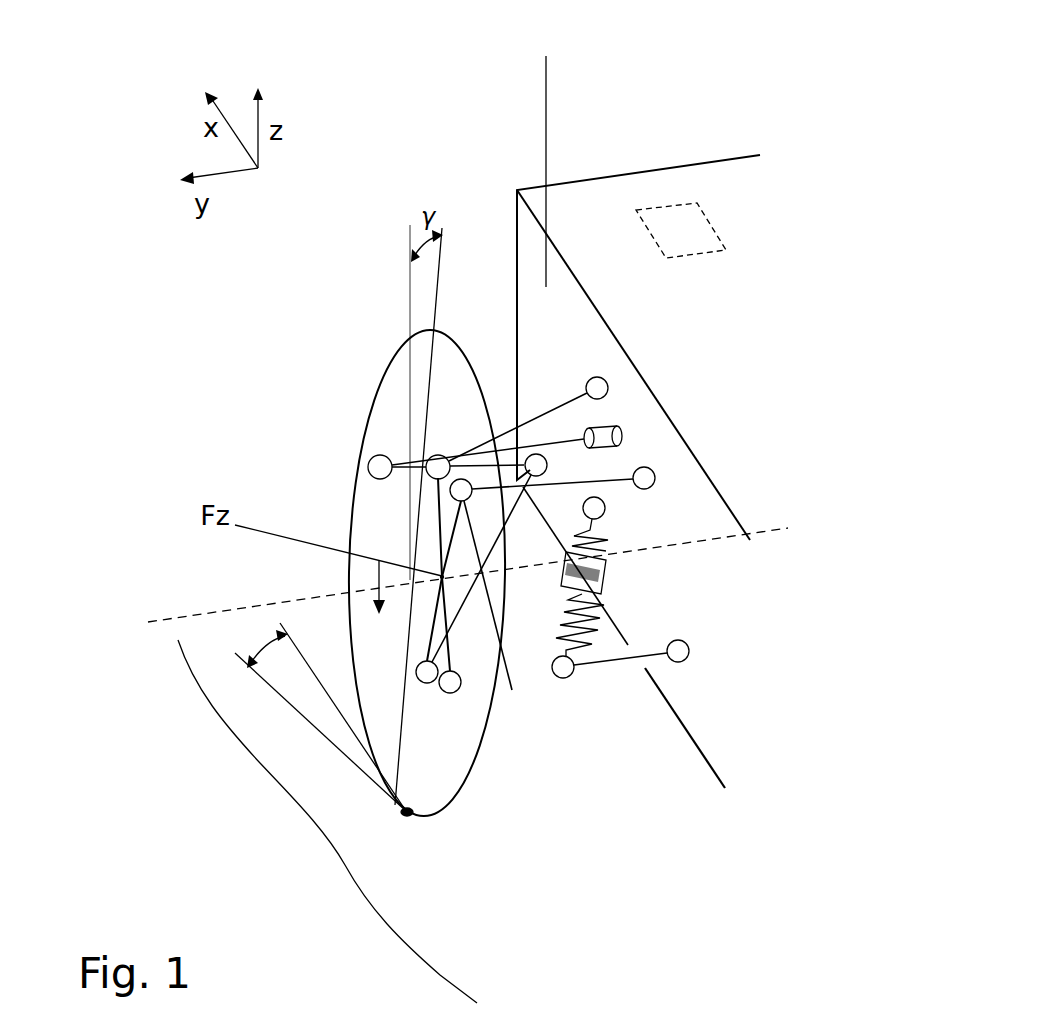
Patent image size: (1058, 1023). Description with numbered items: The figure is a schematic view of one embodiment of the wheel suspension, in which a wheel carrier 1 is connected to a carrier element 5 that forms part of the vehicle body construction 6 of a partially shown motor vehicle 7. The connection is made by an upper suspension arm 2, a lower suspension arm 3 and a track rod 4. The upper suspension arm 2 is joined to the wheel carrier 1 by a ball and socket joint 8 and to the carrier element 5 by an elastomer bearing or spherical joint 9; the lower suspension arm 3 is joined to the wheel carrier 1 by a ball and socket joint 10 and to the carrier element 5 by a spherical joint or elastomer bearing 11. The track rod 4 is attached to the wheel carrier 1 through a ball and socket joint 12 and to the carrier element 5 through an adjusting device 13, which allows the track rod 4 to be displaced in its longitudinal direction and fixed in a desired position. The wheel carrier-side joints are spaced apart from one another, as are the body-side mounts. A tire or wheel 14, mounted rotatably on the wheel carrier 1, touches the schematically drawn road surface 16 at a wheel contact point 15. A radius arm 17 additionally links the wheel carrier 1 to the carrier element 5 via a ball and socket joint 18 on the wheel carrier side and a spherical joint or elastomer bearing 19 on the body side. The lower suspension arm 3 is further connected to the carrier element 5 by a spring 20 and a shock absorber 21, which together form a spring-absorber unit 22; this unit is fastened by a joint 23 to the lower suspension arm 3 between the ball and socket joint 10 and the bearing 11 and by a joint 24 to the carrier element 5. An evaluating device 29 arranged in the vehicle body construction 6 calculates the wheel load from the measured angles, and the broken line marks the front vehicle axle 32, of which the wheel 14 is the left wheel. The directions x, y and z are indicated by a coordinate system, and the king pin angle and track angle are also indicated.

The wheel carrier 1 is at (442, 576).
The upper suspension arm 2 is at (502, 455).
The lower suspension arm 3 is at (608, 660).
The track rod 4 is at (370, 459).
The carrier element 5 is at (547, 157).
The vehicle body construction 6 is at (648, 168).
The motor vehicle 7 is at (390, 108).
The ball and socket joint 8 is at (438, 467).
The elastomer bearing or spherical joint 9 is at (606, 381).
The ball and socket joint 10 is at (452, 694).
The spherical joint or elastomer bearing 11 is at (690, 656).
The ball and socket joint 12 is at (380, 467).
The adjusting device 13 is at (620, 431).
The tire or wheel 14 is at (402, 463).
The wheel contact point 15 is at (403, 814).
The road surface 16 is at (212, 700).
The radius arm 17 is at (512, 690).
The ball and socket joint 18 is at (428, 684).
The spherical joint or elastomer bearing 19 is at (548, 465).
The spring 20 is at (600, 632).
The shock absorber 21 is at (590, 562).
The spring-absorber unit 22 is at (625, 588).
The joint 23 is at (566, 678).
The joint 24 is at (606, 508).
The evaluating device 29 is at (690, 230).
The front vehicle axle 32 is at (205, 612).